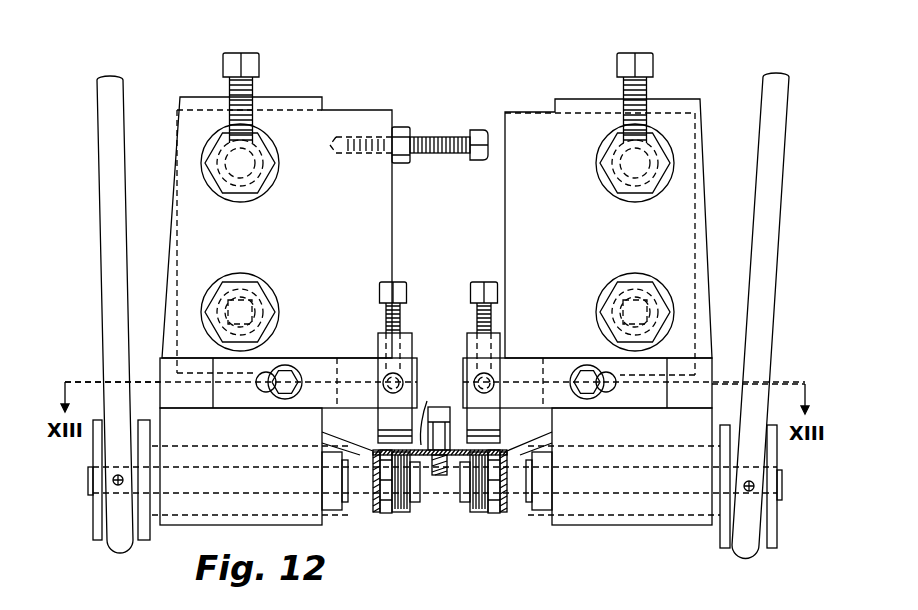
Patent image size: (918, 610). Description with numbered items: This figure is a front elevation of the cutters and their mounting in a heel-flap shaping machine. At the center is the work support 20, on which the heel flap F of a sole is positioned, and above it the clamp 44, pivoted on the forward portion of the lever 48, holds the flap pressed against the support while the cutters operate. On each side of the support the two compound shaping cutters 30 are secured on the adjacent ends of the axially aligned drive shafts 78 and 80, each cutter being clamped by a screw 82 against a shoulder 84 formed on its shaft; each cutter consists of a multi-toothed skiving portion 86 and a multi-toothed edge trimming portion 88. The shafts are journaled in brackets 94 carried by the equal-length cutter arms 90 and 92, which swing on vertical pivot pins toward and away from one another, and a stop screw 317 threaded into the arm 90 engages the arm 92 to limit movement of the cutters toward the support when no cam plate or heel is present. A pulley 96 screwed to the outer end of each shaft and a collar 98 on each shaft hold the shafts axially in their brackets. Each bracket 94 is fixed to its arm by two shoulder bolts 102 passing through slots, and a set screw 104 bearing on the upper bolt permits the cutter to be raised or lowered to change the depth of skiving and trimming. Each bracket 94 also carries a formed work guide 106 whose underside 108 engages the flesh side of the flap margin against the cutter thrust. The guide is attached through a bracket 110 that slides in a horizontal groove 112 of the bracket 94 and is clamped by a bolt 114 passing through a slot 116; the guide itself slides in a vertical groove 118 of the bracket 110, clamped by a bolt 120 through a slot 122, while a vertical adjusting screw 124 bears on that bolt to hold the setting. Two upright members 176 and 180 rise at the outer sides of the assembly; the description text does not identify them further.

The left arm 176 is at (97, 183).
The right arm 180 is at (775, 300).
The cutter arm 90 is at (392, 214).
The cutter arm 92 is at (505, 210).
The set screw 104 is at (261, 68).
The shoulder bolt 102 is at (247, 282).
The stop screw 317 is at (434, 136).
The bracket 110 is at (342, 358).
The horizontal groove 112 is at (184, 360).
The slot 116 is at (266, 372).
The bolt 114 is at (262, 388).
The work guide 106 is at (378, 421).
The vertical adjusting screw 124 is at (472, 291).
The bolt 120 is at (384, 376).
The vertical groove 118 is at (384, 390).
The slot 122 is at (477, 380).
The underside 108 is at (374, 452).
The lever 48 is at (440, 406).
The clamp 44 is at (452, 428).
The heel flap F is at (429, 414).
The bracket 94 is at (241, 526).
The collar 98 is at (332, 510).
The edge trimming portion 88 is at (378, 513).
The shoulder 84 is at (386, 514).
The compound shaping cutter 30 is at (401, 513).
The skiving portion 86 is at (415, 503).
The screw 82 is at (418, 495).
The work support 20 is at (440, 476).
The pulley 96 is at (98, 541).
The drive shaft 78 is at (88, 480).
The drive shaft 80 is at (783, 485).